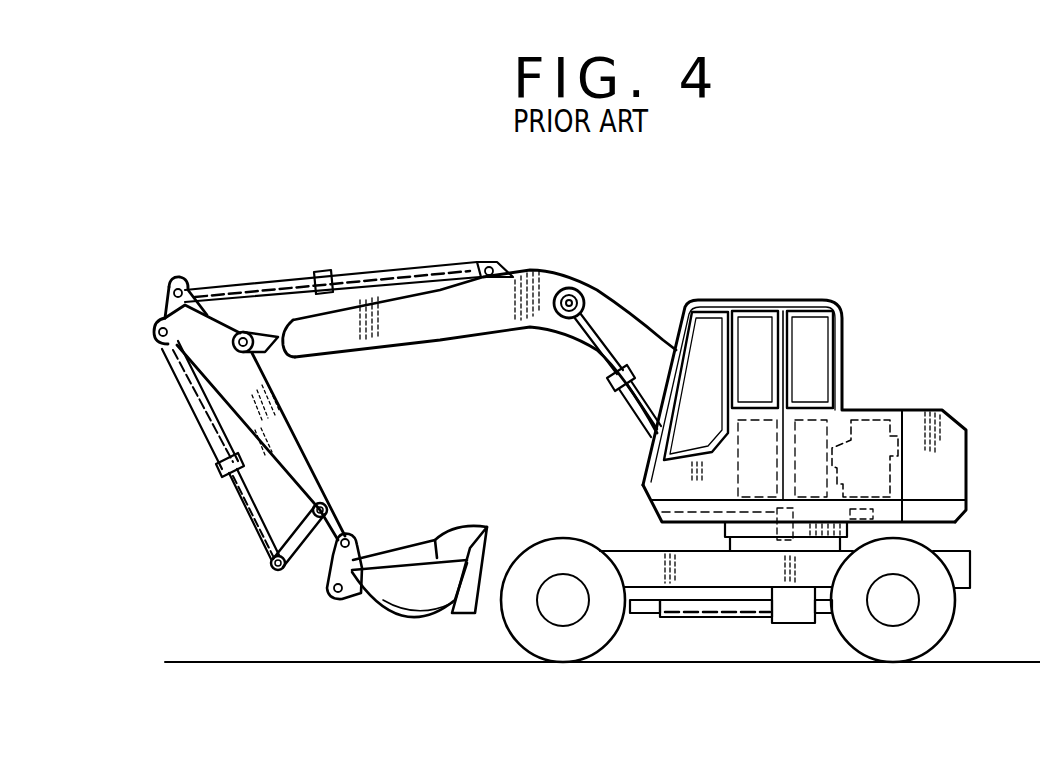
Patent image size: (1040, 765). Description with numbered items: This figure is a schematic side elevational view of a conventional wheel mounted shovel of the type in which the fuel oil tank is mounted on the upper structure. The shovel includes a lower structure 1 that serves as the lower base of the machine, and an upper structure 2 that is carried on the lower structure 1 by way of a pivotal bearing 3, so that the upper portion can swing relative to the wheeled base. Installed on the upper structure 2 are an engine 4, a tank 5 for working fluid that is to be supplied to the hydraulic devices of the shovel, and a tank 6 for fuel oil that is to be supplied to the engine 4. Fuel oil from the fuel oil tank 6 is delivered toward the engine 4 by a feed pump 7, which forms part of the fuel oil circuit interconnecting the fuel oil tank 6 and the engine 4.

The lower structure 1 is at (977, 554).
The upper structure 2 is at (858, 393).
The pivotal bearing 3 is at (725, 530).
The engine 4 is at (892, 422).
The tank for working fluid 5 is at (812, 495).
The tank for fuel oil 6 is at (753, 495).
The feed pump 7 is at (662, 510).